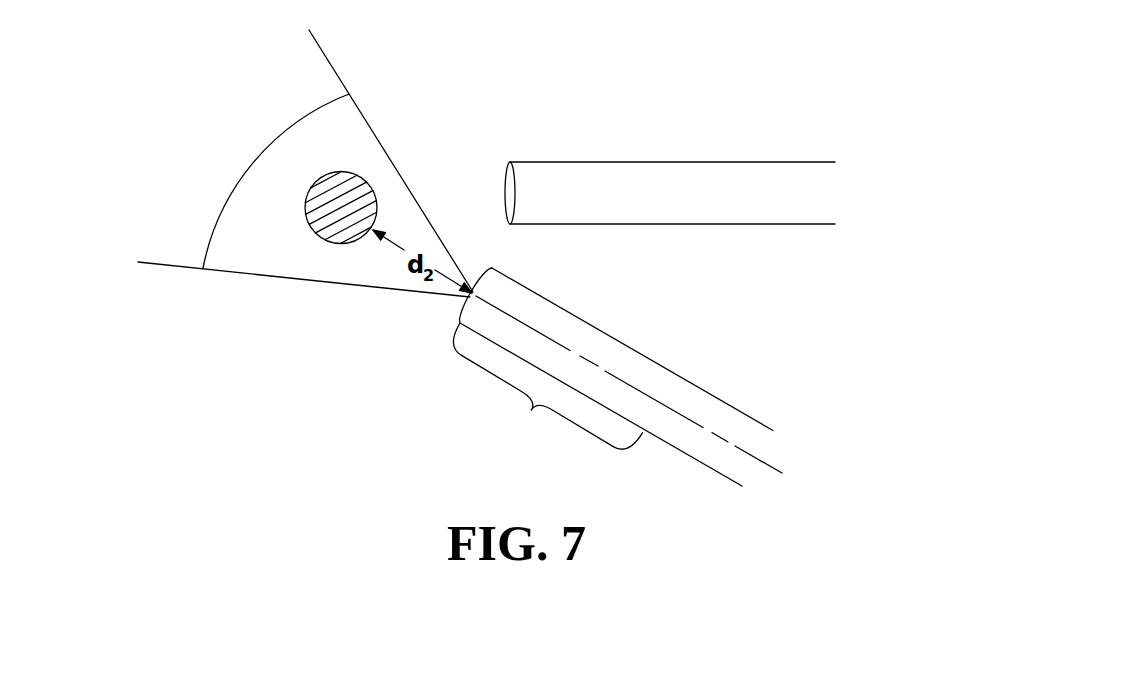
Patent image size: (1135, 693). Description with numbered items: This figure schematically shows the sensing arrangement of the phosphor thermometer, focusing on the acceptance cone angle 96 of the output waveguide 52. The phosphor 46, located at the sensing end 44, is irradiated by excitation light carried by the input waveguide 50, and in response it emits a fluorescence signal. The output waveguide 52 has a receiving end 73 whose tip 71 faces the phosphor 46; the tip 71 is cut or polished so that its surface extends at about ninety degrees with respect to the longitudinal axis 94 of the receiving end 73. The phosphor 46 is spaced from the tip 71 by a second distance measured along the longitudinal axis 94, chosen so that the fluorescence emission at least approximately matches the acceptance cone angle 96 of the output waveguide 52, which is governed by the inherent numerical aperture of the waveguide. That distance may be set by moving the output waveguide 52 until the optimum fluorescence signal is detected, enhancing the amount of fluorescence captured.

The sensing end 44 is at (349, 243).
The phosphor 46 is at (317, 225).
The input waveguide 50 is at (657, 177).
The output waveguide 52 is at (648, 380).
The tip 71 is at (467, 297).
The receiving end 73 is at (541, 394).
The longitudinal axis 94 is at (712, 432).
The acceptance cone angle 96 is at (255, 163).